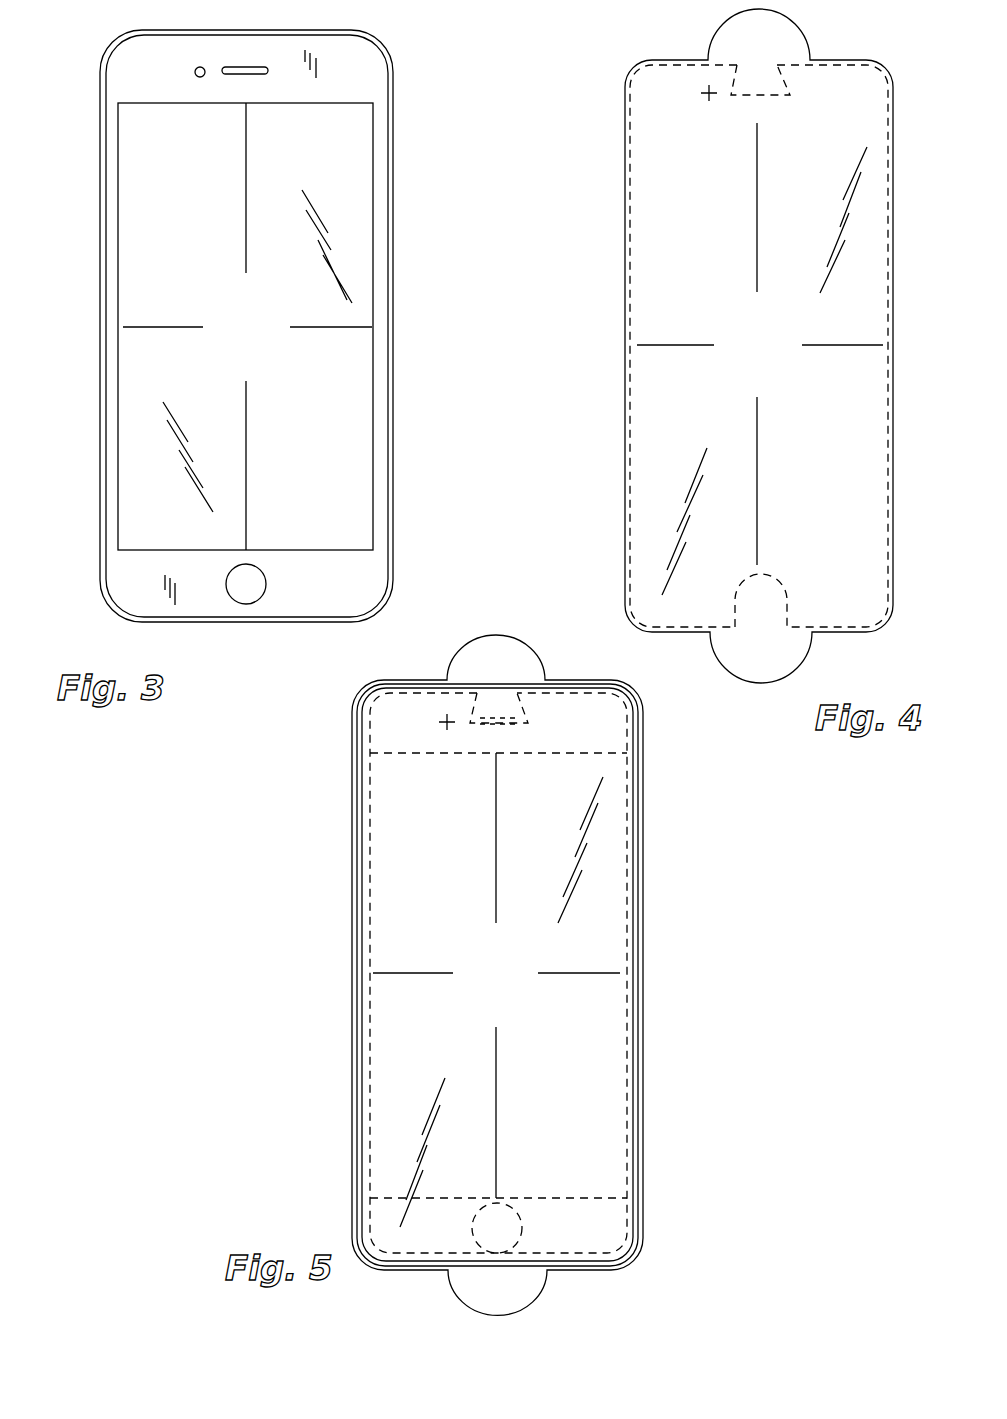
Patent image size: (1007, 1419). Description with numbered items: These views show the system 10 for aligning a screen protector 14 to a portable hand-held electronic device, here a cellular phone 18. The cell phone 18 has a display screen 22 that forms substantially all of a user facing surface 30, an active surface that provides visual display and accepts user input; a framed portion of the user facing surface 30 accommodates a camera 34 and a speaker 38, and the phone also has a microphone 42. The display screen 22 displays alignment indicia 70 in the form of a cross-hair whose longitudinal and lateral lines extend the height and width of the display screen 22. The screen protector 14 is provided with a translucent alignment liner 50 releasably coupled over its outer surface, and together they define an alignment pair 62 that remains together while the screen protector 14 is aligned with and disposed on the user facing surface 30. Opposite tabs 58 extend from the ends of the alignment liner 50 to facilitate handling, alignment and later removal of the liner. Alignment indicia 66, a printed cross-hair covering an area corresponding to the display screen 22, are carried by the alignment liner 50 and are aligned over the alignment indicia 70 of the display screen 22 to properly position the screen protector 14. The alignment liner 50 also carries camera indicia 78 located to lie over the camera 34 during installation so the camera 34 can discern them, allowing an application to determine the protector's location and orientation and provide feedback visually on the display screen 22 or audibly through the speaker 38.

In FIG. 5, the system 10 is at (668, 1076).
In FIG. 4, the screen protector 14 is at (640, 205).
In FIG. 5, the screen protector 14 is at (348, 817).
In FIG. 3, the cellular phone 18 is at (75, 531).
In FIG. 3, the display screen 22 is at (350, 427).
In FIG. 3, the user facing surface 30 is at (307, 590).
In FIG. 3, the camera 34 is at (193, 72).
In FIG. 3, the speaker 38 is at (247, 67).
In FIG. 3, the microphone 42 is at (248, 622).
In FIG. 4, the alignment liner 50 is at (660, 431).
In FIG. 5, the alignment liner 50 is at (388, 1062).
In FIG. 4, the tabs 58 is at (745, 38).
In FIG. 4, the alignment pair 62 is at (915, 582).
In FIG. 5, the alignment pair 62 is at (600, 924).
In FIG. 4, the alignment indicia 66 is at (678, 345).
In FIG. 5, the alignment indicia 66 is at (408, 973).
In FIG. 3, the alignment indicia 70 is at (170, 327).
In FIG. 4, the camera indicia 78 is at (700, 95).
In FIG. 5, the camera indicia 78 is at (457, 720).